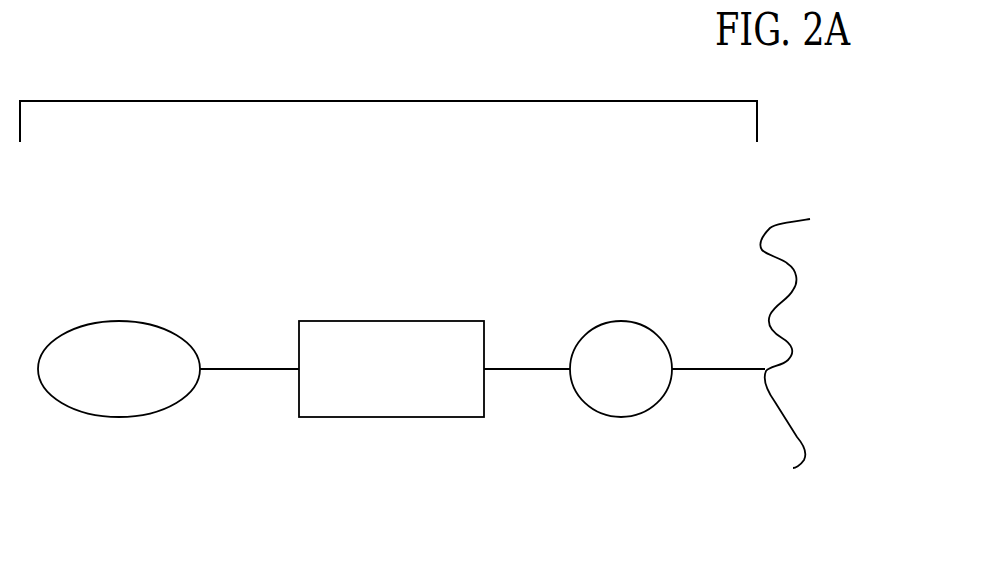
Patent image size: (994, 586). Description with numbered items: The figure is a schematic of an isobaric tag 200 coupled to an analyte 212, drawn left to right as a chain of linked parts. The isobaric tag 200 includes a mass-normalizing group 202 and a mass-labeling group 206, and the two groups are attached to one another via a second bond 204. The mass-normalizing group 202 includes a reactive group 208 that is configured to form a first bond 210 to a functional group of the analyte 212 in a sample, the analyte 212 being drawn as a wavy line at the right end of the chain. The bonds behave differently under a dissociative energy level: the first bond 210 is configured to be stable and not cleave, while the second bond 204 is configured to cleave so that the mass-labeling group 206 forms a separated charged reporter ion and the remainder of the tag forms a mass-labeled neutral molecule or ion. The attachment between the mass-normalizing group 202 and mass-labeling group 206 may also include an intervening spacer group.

The isobaric tag 200 is at (376, 101).
The mass-normalizing group 202 is at (389, 321).
The second bond 204 is at (240, 369).
The mass-labeling group 206 is at (123, 321).
The reactive group 208 is at (613, 322).
The first bond 210 is at (727, 369).
The analyte 212 is at (797, 438).